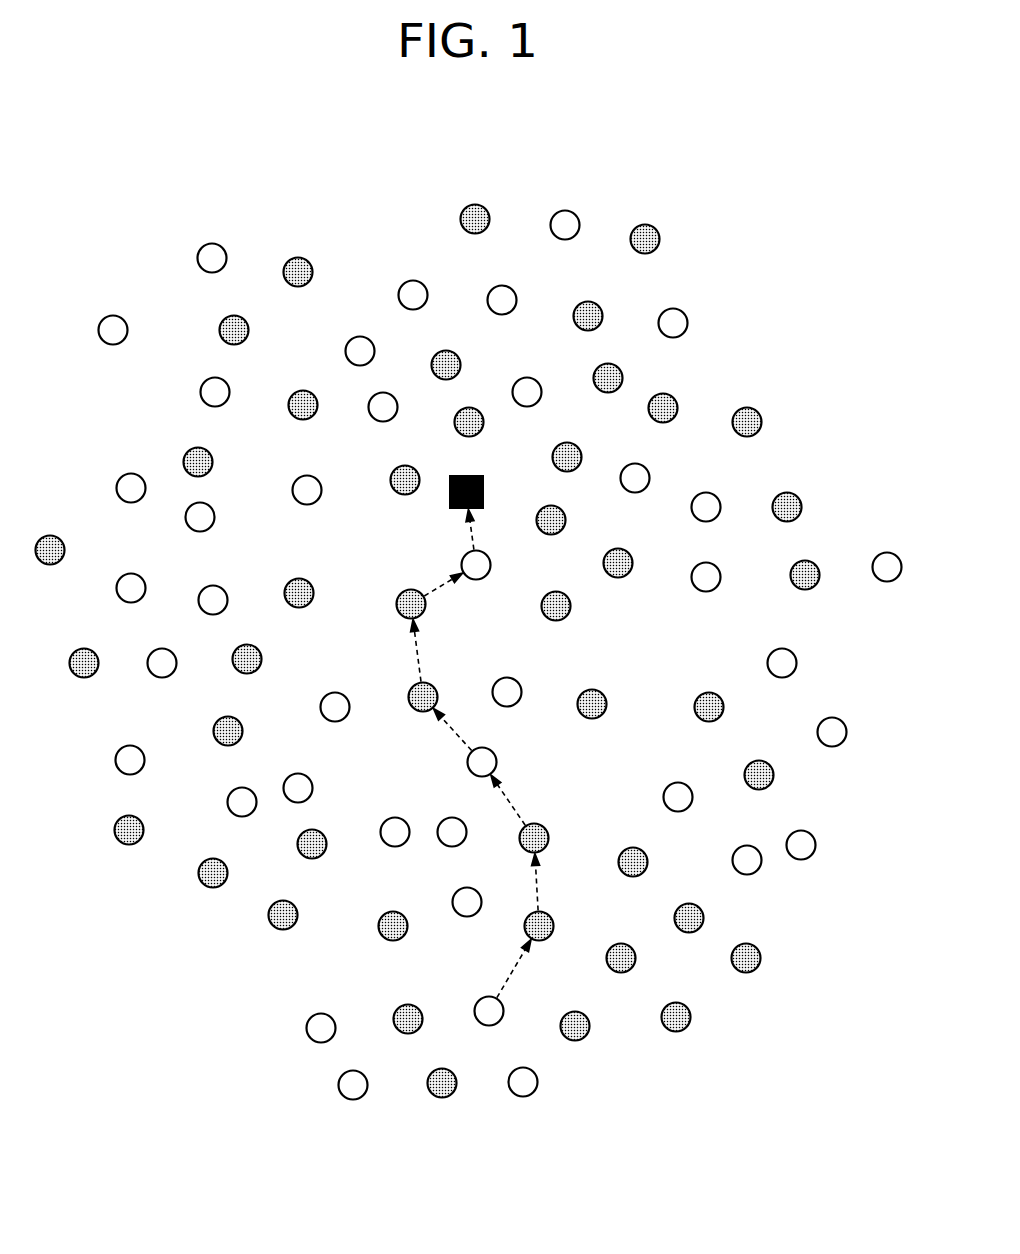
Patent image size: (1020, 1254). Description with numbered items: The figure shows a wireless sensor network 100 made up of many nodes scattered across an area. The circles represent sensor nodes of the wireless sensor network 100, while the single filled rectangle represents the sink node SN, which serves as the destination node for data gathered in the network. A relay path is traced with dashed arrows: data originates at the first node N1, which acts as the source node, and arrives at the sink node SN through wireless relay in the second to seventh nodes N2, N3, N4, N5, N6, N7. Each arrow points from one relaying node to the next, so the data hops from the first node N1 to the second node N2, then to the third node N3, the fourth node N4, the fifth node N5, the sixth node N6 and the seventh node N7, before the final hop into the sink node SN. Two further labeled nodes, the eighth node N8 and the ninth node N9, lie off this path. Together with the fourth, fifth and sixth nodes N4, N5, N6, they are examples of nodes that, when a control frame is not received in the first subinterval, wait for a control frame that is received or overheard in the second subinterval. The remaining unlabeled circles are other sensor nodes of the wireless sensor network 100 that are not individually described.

The wireless sensor network 100 is at (170, 195).
The sink node SN is at (485, 490).
The first node N1 is at (503, 1003).
The second node N2 is at (552, 915).
The third node N3 is at (550, 830).
The fourth node N4 is at (497, 748).
The fifth node N5 is at (437, 688).
The sixth node N6 is at (400, 592).
The seventh node N7 is at (491, 563).
The eighth node N8 is at (797, 660).
The ninth node N9 is at (400, 818).